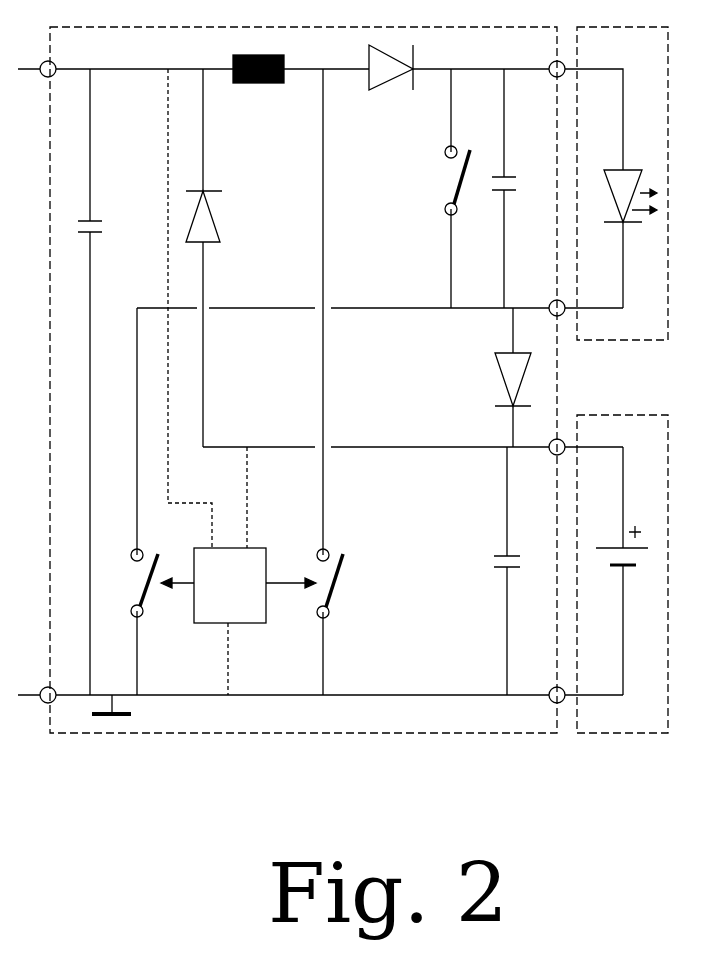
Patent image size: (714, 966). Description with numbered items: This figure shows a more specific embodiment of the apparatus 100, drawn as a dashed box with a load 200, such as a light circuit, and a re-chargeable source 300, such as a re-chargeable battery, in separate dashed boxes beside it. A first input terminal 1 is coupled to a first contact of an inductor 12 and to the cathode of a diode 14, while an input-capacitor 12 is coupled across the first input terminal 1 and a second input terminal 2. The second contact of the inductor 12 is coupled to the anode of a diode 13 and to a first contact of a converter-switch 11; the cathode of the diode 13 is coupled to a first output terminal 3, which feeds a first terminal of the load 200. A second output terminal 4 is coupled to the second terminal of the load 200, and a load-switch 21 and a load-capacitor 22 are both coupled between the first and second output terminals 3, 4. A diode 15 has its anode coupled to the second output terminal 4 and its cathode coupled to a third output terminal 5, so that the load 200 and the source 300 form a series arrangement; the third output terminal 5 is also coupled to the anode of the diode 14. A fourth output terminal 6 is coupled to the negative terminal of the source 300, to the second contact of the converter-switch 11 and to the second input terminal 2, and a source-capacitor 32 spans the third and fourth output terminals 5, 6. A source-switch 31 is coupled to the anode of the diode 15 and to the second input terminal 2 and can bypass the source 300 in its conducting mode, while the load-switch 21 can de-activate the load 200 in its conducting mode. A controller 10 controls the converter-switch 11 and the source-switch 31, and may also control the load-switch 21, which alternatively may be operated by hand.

The first input terminal 1 is at (57, 82).
The second input terminal 2 is at (57, 683).
The first output terminal 3 is at (546, 82).
The second output terminal 4 is at (548, 295).
The third output terminal 5 is at (549, 460).
The fourth output terminal 6 is at (546, 682).
The controller 10 is at (238, 571).
The converter-switch 11 is at (343, 583).
The inductor 12 is at (181, 159).
The diode 13 is at (391, 82).
The diode 14 is at (218, 216).
The diode 15 is at (500, 379).
The load-switch 21 is at (445, 180).
The load-capacitor 22 is at (515, 199).
The source-switch 31 is at (135, 583).
The source-capacitor 32 is at (516, 577).
The apparatus 100 is at (303, 399).
The load 200 is at (622, 203).
The re-chargeable source 300 is at (622, 593).